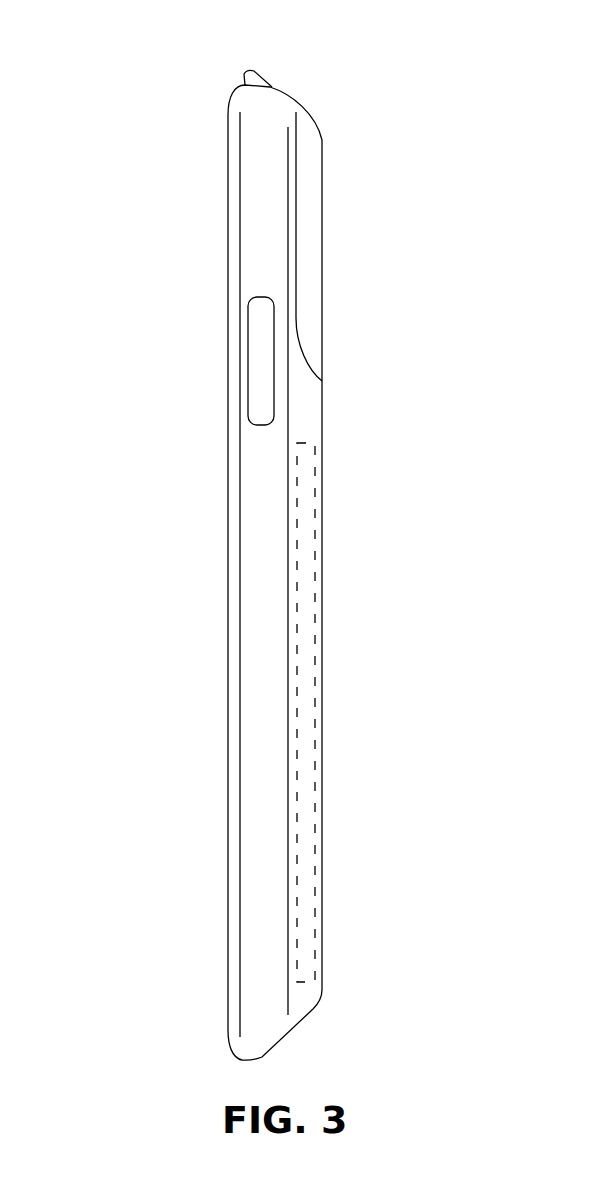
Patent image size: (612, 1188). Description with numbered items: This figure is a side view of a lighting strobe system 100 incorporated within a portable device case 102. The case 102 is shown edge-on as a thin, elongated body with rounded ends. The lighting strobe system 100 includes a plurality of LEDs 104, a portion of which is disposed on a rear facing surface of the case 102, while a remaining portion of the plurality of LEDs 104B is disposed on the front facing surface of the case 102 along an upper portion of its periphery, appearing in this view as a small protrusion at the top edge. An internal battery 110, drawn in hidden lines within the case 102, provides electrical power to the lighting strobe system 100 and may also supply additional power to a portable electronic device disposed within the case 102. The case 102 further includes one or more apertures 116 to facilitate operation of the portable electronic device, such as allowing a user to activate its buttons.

The lighting strobe system 100 is at (42, 104).
The portable device case 102 is at (259, 210).
The plurality of LEDs 104 is at (323, 181).
The remaining portion of the plurality of LEDs 104B is at (243, 83).
The internal battery 110 is at (305, 520).
The apertures 116 is at (248, 367).